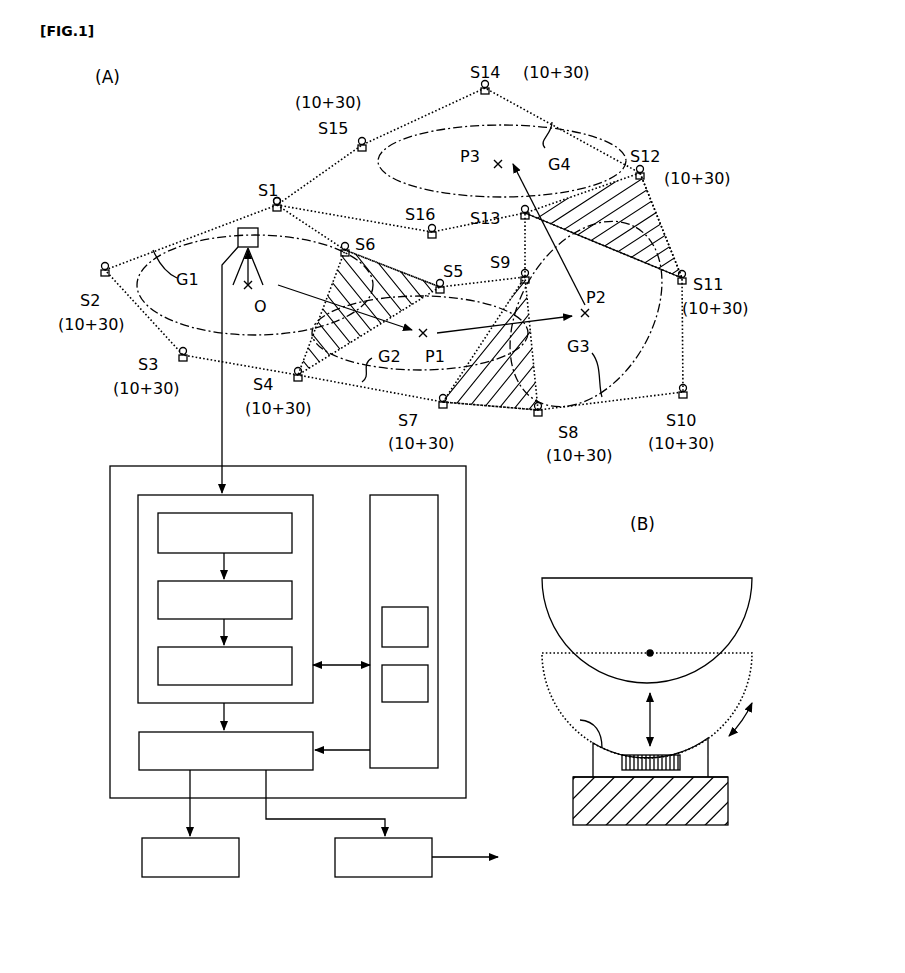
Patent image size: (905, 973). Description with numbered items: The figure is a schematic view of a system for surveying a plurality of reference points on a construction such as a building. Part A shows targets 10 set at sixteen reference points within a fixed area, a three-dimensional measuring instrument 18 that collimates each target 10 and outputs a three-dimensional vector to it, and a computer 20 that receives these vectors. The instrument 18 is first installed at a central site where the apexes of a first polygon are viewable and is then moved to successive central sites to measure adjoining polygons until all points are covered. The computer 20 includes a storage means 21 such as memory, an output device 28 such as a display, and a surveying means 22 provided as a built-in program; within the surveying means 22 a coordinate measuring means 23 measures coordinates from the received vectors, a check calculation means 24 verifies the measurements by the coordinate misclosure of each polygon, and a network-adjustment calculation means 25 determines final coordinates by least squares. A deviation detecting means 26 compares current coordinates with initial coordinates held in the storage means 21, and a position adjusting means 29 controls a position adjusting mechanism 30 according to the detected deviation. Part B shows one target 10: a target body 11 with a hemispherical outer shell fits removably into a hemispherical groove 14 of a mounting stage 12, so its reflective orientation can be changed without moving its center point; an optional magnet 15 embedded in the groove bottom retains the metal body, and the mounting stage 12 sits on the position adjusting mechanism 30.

The target 10 is at (268, 201).
The target body 11 is at (688, 578).
The mounting stage 12 is at (700, 753).
The hemispherical groove 14 is at (580, 720).
The magnet 15 is at (683, 763).
The 3D measuring instrument 18 is at (237, 237).
The computer 20 is at (466, 511).
The storage means 21 is at (438, 564).
The surveying means 22 is at (138, 508).
The coordinate measuring means 23 is at (158, 547).
The check calculation means 24 is at (158, 614).
The network-adjustment calculation means 25 is at (158, 680).
The deviation detecting means 26 is at (139, 745).
The output device 28 is at (142, 858).
The position adjusting means 29 is at (335, 858).
The position adjusting mechanism 30 is at (286, 204).